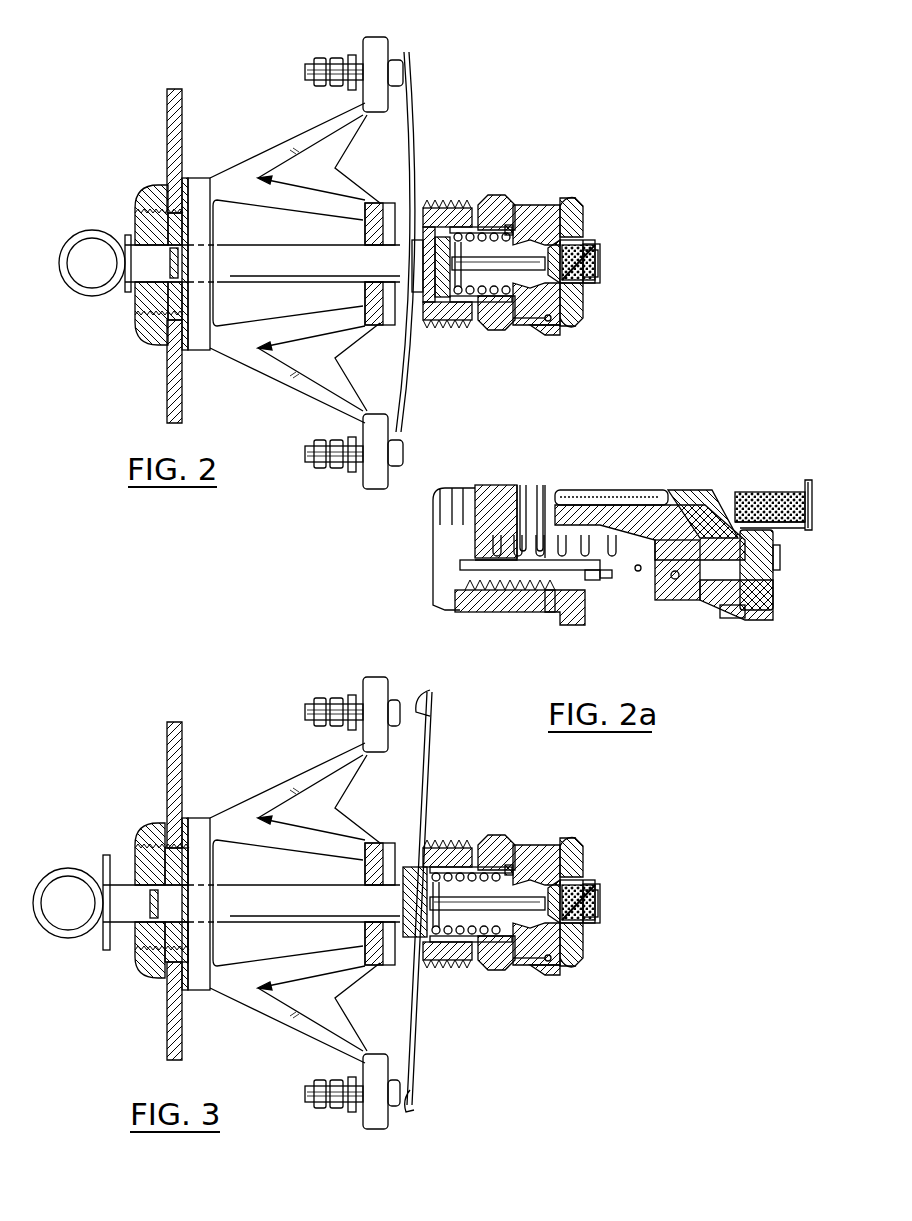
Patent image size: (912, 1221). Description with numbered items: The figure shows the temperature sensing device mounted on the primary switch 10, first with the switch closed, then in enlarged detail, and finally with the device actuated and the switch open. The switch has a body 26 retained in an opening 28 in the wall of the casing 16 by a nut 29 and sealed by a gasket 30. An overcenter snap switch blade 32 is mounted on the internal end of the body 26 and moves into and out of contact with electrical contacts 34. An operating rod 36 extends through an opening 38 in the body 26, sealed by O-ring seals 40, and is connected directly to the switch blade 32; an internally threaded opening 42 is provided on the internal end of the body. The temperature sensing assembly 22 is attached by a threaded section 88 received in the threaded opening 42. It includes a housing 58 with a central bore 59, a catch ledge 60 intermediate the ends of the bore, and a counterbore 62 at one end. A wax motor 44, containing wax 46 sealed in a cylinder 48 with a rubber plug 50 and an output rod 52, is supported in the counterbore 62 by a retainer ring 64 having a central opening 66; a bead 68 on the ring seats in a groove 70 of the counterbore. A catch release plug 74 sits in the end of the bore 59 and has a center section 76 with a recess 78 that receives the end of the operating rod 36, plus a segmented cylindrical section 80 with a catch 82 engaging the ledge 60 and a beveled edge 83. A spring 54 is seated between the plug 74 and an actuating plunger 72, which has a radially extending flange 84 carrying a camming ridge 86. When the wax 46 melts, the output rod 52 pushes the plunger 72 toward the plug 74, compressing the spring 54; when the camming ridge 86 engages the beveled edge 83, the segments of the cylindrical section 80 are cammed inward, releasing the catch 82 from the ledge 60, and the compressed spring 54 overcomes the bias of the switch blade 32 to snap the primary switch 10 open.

In FIG. 2, the primary switch 10 is at (258, 92).
In FIG. 3, the primary switch 10 is at (260, 752).
In FIG. 2, the casing 16 is at (162, 388).
In FIG. 3, the casing 16 is at (160, 1035).
In FIG. 2, the temperature sensing assembly 22 is at (580, 178).
In FIG. 3, the temperature sensing assembly 22 is at (647, 855).
In FIG. 2, the body 26 is at (250, 160).
In FIG. 3, the body 26 is at (295, 903).
In FIG. 2, the opening 28 is at (162, 322).
In FIG. 3, the opening 28 is at (158, 968).
In FIG. 2, the nut 29 is at (146, 190).
In FIG. 3, the nut 29 is at (150, 832).
In FIG. 2, the gasket 30 is at (185, 352).
In FIG. 3, the gasket 30 is at (207, 927).
In FIG. 2, the overcenter snap switch blade 32 is at (410, 120).
In FIG. 3, the overcenter snap switch blade 32 is at (426, 758).
In FIG. 2, the electrical contacts 34 is at (388, 72).
In FIG. 3, the electrical contacts 34 is at (365, 916).
In FIG. 2, the operating rod 36 is at (262, 250).
In FIG. 2a, the operating rod 36 is at (438, 520).
In FIG. 3, the operating rod 36 is at (308, 889).
In FIG. 2, the opening 38 is at (132, 264).
In FIG. 3, the opening 38 is at (130, 887).
In FIG. 2, the O-ring seals 40 is at (180, 284).
In FIG. 3, the O-ring seals 40 is at (132, 945).
In FIG. 2, the internally threaded opening 42 is at (437, 207).
In FIG. 2a, the internally threaded opening 42 is at (535, 590).
In FIG. 3, the internally threaded opening 42 is at (437, 929).
In FIG. 2, the wax motor 44 is at (601, 270).
In FIG. 2a, the wax motor 44 is at (808, 532).
In FIG. 3, the wax motor 44 is at (627, 889).
In FIG. 2, the wax 46 is at (590, 278).
In FIG. 2a, the wax 46 is at (772, 492).
In FIG. 3, the wax 46 is at (611, 903).
In FIG. 2, the cylinder 48 is at (598, 263).
In FIG. 2a, the cylinder 48 is at (783, 522).
In FIG. 3, the cylinder 48 is at (621, 897).
In FIG. 2, the rubber plug 50 is at (556, 270).
In FIG. 2a, the rubber plug 50 is at (715, 492).
In FIG. 3, the rubber plug 50 is at (560, 942).
In FIG. 2, the output rod 52 is at (470, 272).
In FIG. 2a, the output rod 52 is at (610, 490).
In FIG. 3, the output rod 52 is at (489, 942).
In FIG. 2, the spring 54 is at (497, 235).
In FIG. 2a, the spring 54 is at (538, 492).
In FIG. 3, the spring 54 is at (463, 940).
In FIG. 2, the housing 58 is at (560, 333).
In FIG. 2a, the housing 58 is at (745, 615).
In FIG. 3, the housing 58 is at (568, 990).
In FIG. 2, the central bore 59 is at (548, 323).
In FIG. 2a, the central bore 59 is at (678, 580).
In FIG. 3, the central bore 59 is at (572, 875).
In FIG. 2, the catch ledge 60 is at (478, 205).
In FIG. 2a, the catch ledge 60 is at (570, 588).
In FIG. 3, the catch ledge 60 is at (501, 887).
In FIG. 2, the counterbore 62 is at (583, 225).
In FIG. 3, the counterbore 62 is at (597, 852).
In FIG. 2, the retainer ring 64 is at (583, 312).
In FIG. 2a, the retainer ring 64 is at (774, 562).
In FIG. 3, the retainer ring 64 is at (597, 944).
In FIG. 2, the central opening 66 is at (585, 250).
In FIG. 3, the central opening 66 is at (600, 910).
In FIG. 2, the bead 68 is at (572, 207).
In FIG. 2a, the bead 68 is at (745, 600).
In FIG. 3, the bead 68 is at (593, 821).
In FIG. 2, the groove 70 is at (573, 318).
In FIG. 2a, the groove 70 is at (771, 590).
In FIG. 3, the groove 70 is at (597, 970).
In FIG. 2, the actuating plunger 72 is at (519, 320).
In FIG. 2a, the actuating plunger 72 is at (655, 582).
In FIG. 3, the actuating plunger 72 is at (544, 882).
In FIG. 2, the catch release plug 74 is at (420, 295).
In FIG. 2a, the catch release plug 74 is at (457, 566).
In FIG. 3, the catch release plug 74 is at (405, 970).
In FIG. 2, the center section 76 is at (380, 238).
In FIG. 2a, the center section 76 is at (490, 492).
In FIG. 3, the center section 76 is at (360, 864).
In FIG. 2, the recess 78 is at (416, 268).
In FIG. 2a, the recess 78 is at (478, 533).
In FIG. 2, the cylindrical section 80 is at (452, 232).
In FIG. 2a, the cylindrical section 80 is at (542, 570).
In FIG. 3, the cylindrical section 80 is at (460, 871).
In FIG. 2, the catch 82 is at (484, 302).
In FIG. 2a, the catch 82 is at (592, 582).
In FIG. 3, the catch 82 is at (471, 828).
In FIG. 2, the beveled edge 83 is at (480, 306).
In FIG. 2a, the beveled edge 83 is at (612, 580).
In FIG. 3, the beveled edge 83 is at (471, 873).
In FIG. 2, the radially extending flange 84 is at (517, 237).
In FIG. 2a, the radially extending flange 84 is at (684, 575).
In FIG. 3, the radially extending flange 84 is at (536, 878).
In FIG. 2, the camming ridge 86 is at (509, 226).
In FIG. 2a, the camming ridge 86 is at (640, 572).
In FIG. 3, the camming ridge 86 is at (508, 928).
In FIG. 2, the threaded section 88 is at (440, 322).
In FIG. 2a, the threaded section 88 is at (492, 602).
In FIG. 3, the threaded section 88 is at (447, 974).